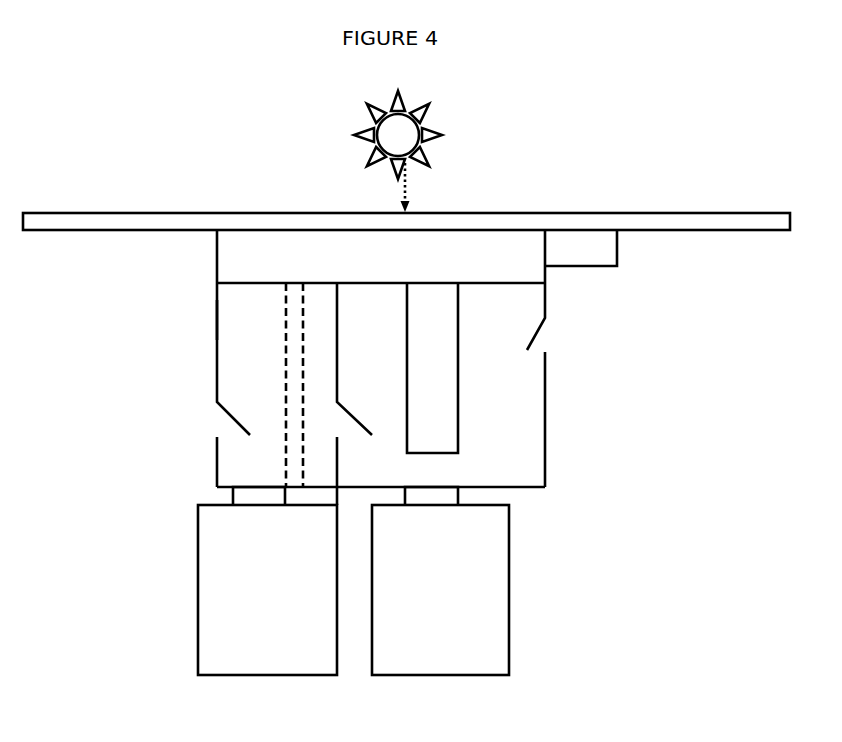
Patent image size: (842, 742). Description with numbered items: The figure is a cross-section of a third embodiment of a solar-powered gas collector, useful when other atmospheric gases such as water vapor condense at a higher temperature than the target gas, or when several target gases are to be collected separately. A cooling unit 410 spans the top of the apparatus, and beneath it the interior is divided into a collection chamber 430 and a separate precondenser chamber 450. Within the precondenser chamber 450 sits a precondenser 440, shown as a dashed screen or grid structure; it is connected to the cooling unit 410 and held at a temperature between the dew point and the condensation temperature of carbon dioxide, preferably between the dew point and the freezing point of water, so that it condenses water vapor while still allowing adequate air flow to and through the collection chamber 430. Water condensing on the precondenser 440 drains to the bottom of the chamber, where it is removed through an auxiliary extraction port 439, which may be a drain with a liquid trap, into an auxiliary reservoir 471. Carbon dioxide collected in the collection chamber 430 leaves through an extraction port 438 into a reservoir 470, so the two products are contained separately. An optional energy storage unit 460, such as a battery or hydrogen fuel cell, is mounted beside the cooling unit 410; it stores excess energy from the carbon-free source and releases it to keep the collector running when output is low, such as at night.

The cooling unit 410 is at (350, 259).
The collection chamber 430 is at (555, 420).
The extraction port 438 is at (468, 497).
The auxiliary extraction port 439 is at (223, 497).
The precondenser 440 is at (276, 368).
The precondenser chamber 450 is at (207, 317).
The energy storage unit 460 is at (587, 253).
The reservoir 470 is at (519, 590).
The auxiliary reservoir 471 is at (188, 590).